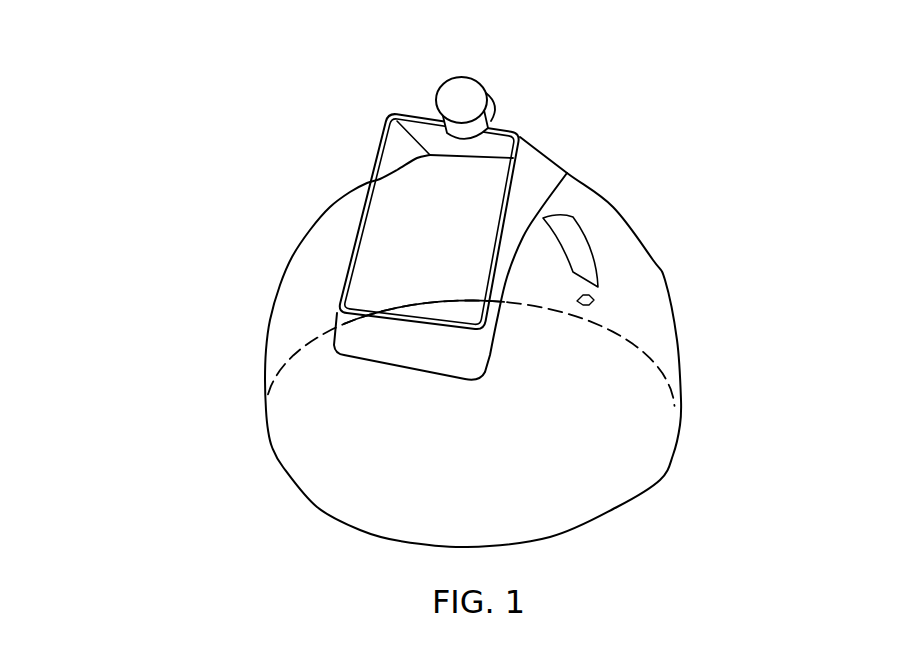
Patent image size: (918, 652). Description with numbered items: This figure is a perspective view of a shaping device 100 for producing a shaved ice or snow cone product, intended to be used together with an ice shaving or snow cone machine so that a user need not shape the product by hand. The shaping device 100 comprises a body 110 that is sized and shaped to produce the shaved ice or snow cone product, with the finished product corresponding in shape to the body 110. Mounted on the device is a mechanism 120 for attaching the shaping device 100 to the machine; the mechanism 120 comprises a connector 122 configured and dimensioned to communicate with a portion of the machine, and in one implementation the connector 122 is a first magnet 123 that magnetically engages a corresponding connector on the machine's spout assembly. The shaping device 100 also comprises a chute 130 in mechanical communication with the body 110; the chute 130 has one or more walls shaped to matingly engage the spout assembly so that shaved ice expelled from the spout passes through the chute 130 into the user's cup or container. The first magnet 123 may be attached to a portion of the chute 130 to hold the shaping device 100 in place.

The shaping device 100 is at (391, 278).
The body 110 is at (270, 368).
The mechanism 120 is at (511, 74).
The connector 122 is at (461, 100).
The first magnet 123 is at (435, 97).
The chute 130 is at (490, 258).